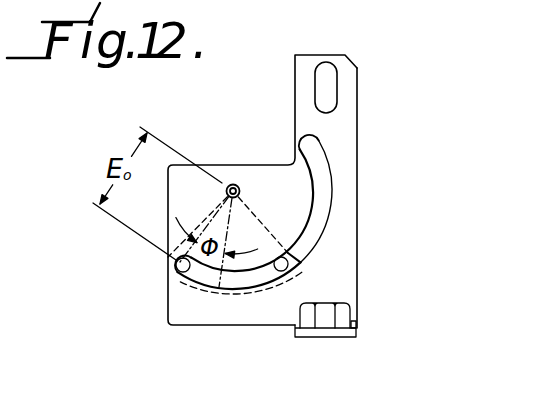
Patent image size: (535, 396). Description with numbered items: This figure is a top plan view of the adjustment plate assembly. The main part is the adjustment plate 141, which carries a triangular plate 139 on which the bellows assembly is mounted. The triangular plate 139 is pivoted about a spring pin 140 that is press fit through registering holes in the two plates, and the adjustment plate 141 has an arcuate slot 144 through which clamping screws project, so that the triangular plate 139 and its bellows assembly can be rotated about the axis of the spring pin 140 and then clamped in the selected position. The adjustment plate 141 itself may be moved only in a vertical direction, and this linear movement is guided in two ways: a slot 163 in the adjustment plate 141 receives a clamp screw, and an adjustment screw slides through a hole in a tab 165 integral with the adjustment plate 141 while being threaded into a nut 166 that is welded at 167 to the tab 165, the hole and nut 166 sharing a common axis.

The triangular plate 139 is at (170, 260).
The spring pin 140 is at (238, 186).
The adjustment plate 141 is at (166, 322).
The arcuate slot 144 is at (320, 224).
The slot 163 is at (333, 78).
The tab 165 is at (330, 336).
The nut 166 is at (300, 313).
The weld 167 is at (355, 322).